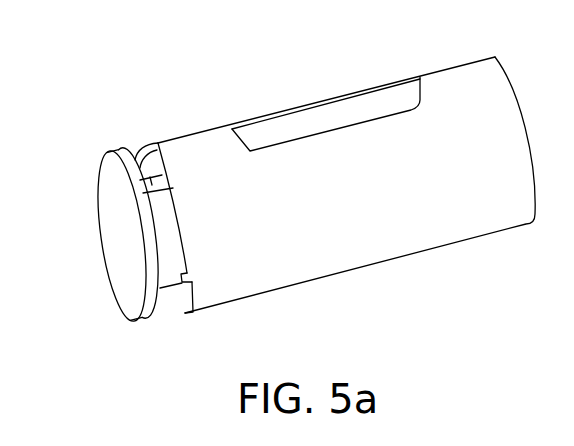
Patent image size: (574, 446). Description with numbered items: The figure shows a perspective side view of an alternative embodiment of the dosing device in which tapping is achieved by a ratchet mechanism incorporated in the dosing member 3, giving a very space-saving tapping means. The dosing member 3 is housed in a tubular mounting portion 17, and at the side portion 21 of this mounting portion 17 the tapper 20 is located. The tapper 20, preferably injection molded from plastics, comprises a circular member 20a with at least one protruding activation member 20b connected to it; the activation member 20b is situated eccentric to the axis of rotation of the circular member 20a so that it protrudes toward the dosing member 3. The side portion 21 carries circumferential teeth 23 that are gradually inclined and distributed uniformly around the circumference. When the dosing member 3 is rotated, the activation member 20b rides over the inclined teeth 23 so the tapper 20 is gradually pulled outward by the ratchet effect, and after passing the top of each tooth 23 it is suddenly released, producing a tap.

The dosing member 3 is at (400, 100).
The tubular mounting portion 17 is at (452, 213).
The tapper 20 is at (94, 219).
The circular member 20a is at (133, 297).
The activation member 20b is at (132, 156).
The side portion 21 is at (159, 143).
The circumferential teeth 23 is at (187, 270).